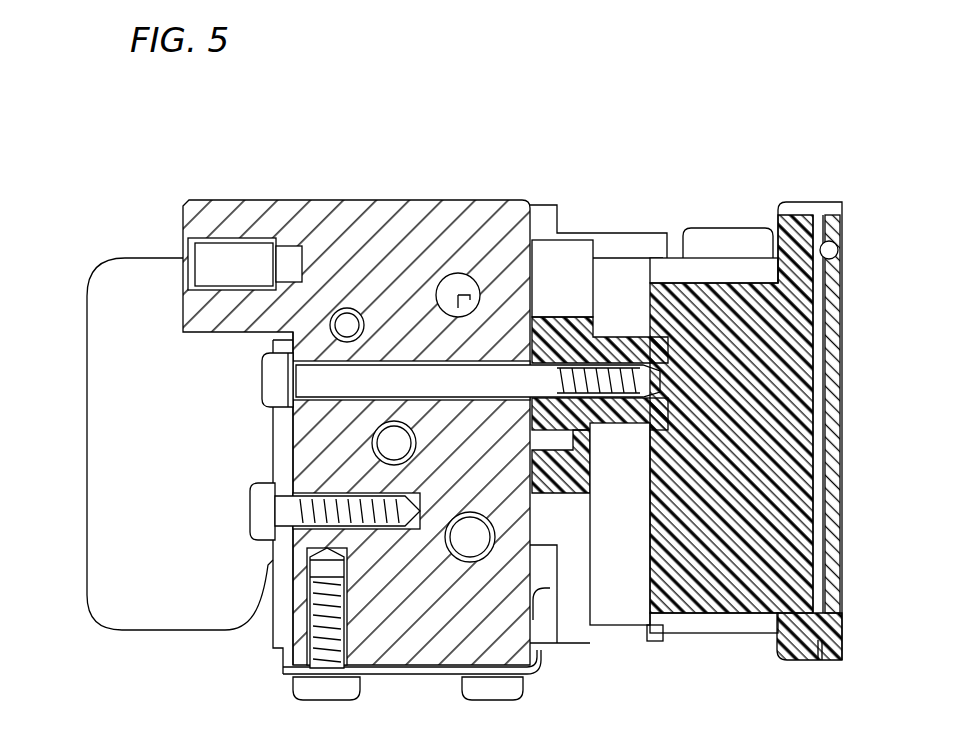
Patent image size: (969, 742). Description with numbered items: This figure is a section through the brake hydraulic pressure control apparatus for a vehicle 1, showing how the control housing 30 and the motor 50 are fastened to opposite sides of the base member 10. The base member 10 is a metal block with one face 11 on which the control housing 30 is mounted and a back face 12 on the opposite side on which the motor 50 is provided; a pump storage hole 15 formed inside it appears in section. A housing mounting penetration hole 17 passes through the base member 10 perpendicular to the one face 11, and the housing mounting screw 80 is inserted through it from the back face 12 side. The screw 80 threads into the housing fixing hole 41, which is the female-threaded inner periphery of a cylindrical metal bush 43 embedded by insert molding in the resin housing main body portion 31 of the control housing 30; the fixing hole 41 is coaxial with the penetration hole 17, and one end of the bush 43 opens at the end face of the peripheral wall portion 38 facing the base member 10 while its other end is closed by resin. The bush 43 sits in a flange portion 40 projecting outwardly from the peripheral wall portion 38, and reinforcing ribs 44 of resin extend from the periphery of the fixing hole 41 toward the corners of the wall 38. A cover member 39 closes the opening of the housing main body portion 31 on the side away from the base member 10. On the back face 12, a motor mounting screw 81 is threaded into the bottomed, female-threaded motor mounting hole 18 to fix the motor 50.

The brake hydraulic pressure control apparatus for a vehicle 1 is at (422, 168).
The base member 10 is at (500, 199).
The one face 11 is at (548, 600).
The back face 12 is at (225, 630).
The pump storage hole 15 is at (402, 448).
The housing mounting penetration hole 17 is at (404, 371).
The motor mounting hole 18 is at (388, 528).
The control housing 30 is at (737, 297).
The housing main body portion 31 is at (723, 553).
The peripheral wall portion 38 is at (568, 263).
The cover member 39 is at (836, 204).
The flange portion 40 is at (597, 477).
The housing fixing hole 41 is at (708, 340).
The bush 43 is at (603, 355).
The reinforcing rib 44 is at (579, 495).
The motor 50 is at (118, 320).
The housing mounting screw 80 is at (262, 372).
The motor mounting screw 81 is at (262, 508).